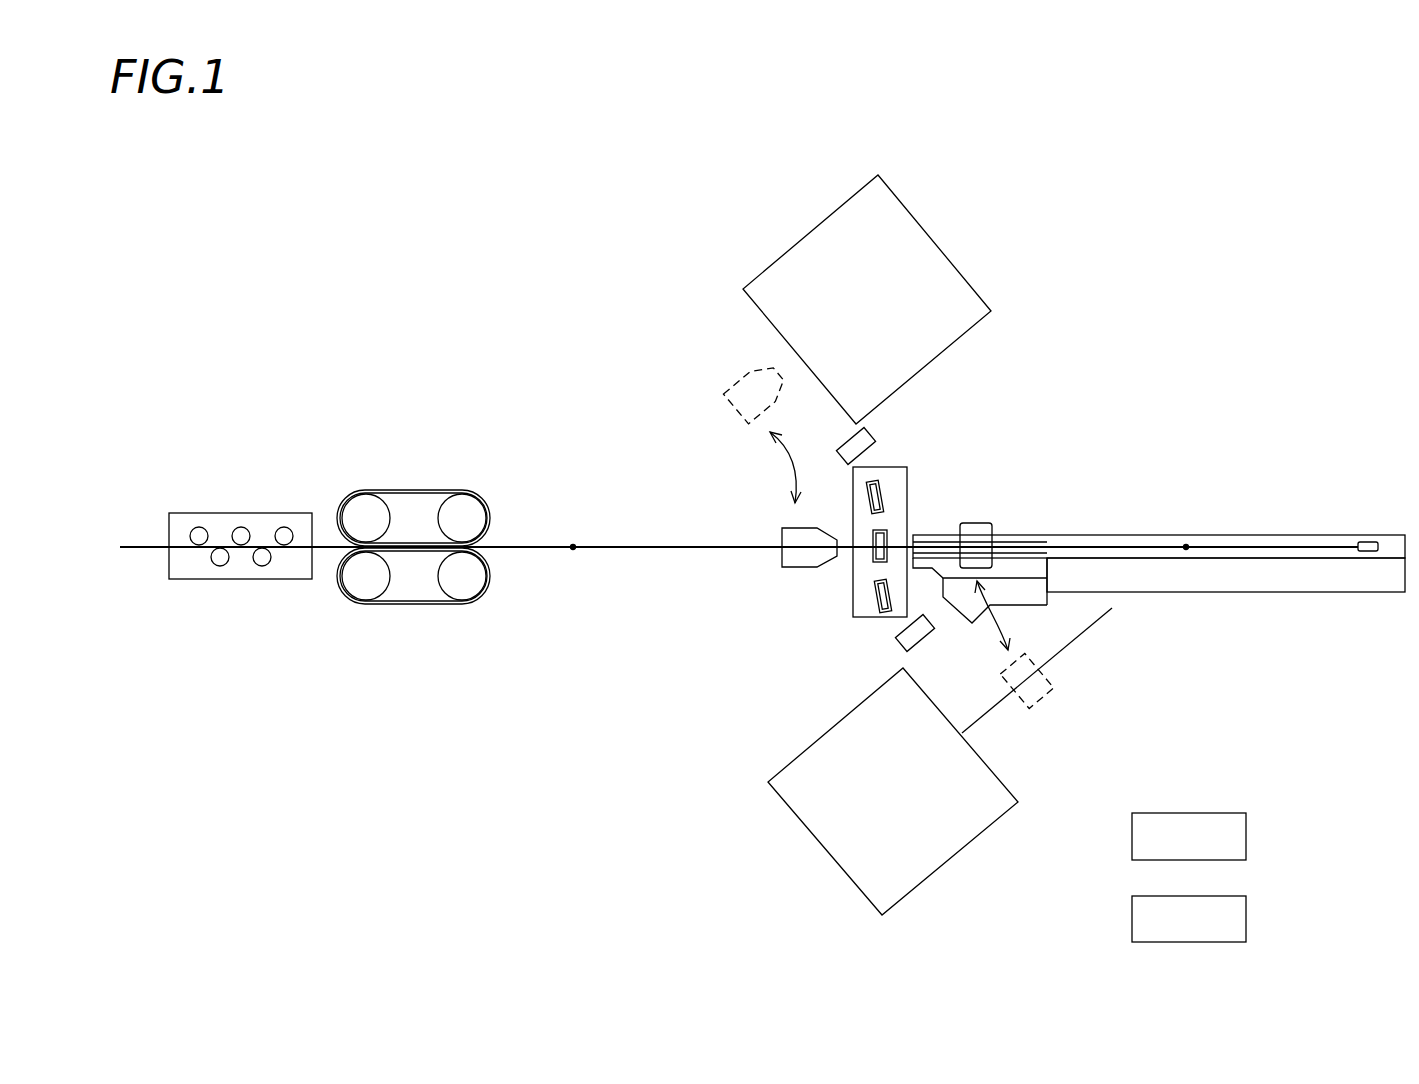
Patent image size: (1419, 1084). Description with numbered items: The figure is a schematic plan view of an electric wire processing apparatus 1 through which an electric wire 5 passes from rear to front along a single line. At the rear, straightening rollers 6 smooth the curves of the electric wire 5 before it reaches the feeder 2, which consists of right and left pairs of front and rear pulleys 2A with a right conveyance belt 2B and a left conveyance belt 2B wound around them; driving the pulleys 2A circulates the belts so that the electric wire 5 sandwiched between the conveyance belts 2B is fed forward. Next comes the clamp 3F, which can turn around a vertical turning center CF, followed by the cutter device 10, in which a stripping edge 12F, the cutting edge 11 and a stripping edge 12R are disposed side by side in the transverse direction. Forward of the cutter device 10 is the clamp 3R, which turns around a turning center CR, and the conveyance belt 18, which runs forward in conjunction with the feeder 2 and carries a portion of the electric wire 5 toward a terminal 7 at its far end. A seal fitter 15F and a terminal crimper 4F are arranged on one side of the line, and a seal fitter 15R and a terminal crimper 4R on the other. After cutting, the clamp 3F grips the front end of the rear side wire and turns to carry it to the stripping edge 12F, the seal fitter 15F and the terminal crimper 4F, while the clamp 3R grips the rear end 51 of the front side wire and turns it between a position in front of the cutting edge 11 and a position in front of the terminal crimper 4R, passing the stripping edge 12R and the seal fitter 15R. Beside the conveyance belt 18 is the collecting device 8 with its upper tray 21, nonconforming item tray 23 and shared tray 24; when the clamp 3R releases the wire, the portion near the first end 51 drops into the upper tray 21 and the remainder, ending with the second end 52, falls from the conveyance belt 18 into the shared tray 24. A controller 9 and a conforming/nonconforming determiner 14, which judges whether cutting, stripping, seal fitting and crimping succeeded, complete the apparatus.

The electric wire processing apparatus 1 is at (428, 290).
The feeder 2 is at (414, 544).
The pulleys 2A is at (362, 510).
The conveyance belt 2B is at (430, 490).
The clamp 3F is at (782, 528).
The clamp 3R is at (978, 522).
The terminal crimper 4F is at (930, 237).
The terminal crimper 4R is at (965, 846).
The electric wire 5 is at (642, 545).
The straightening rollers 6 is at (284, 527).
The terminals 7 is at (1370, 541).
The collecting device 8 is at (1164, 591).
The controller 9 is at (1246, 835).
The cutter device 10 is at (876, 499).
The cutting edge 11 is at (872, 540).
The stripping edge 12F is at (877, 480).
The stripping edge 12R is at (877, 593).
The conforming/nonconforming determiner 14 is at (1246, 917).
The seal fitter 15F is at (838, 450).
The seal fitter 15R is at (898, 640).
The conveyance belt 18 is at (1267, 535).
The upper tray 21 is at (1028, 565).
The nonconforming item tray 23 is at (1103, 598).
The shared tray 24 is at (1258, 577).
The rear end (first end) 51 is at (938, 540).
The second end 52 is at (1342, 542).
The turning center CF is at (573, 544).
The turning center CR is at (1186, 544).